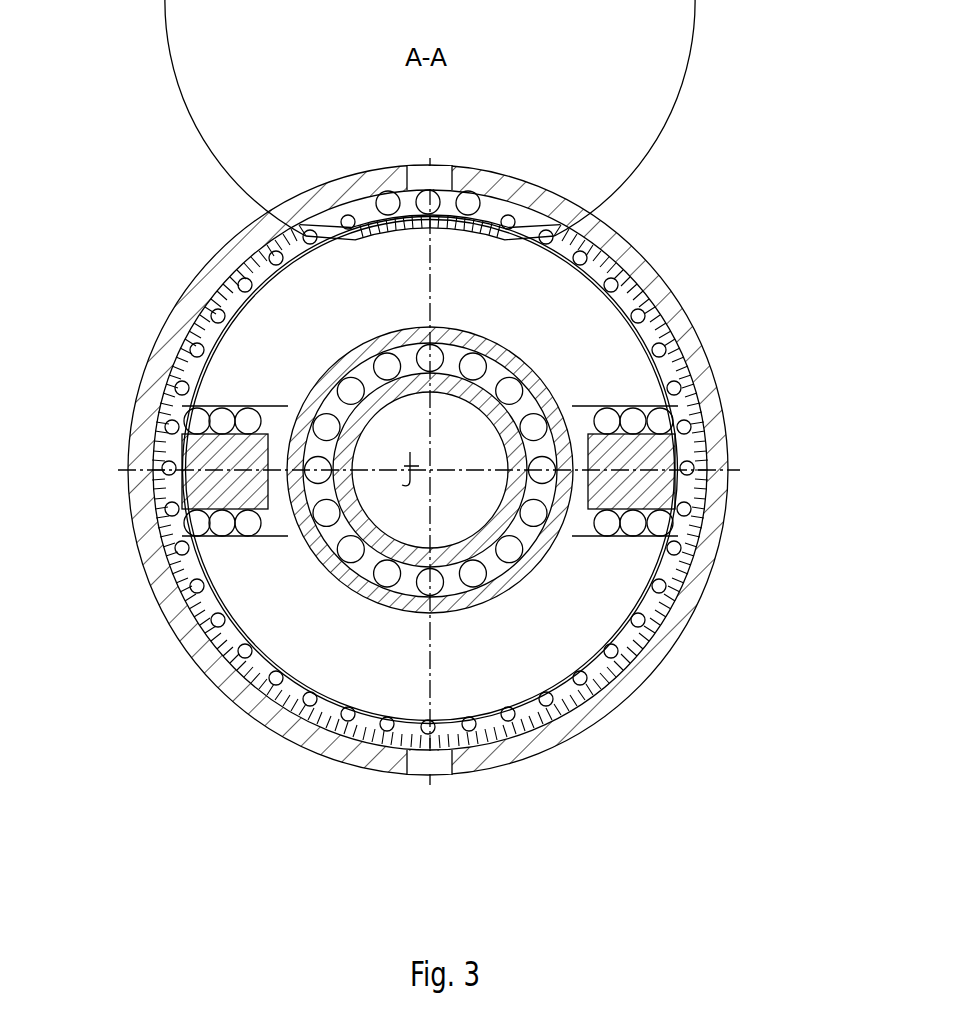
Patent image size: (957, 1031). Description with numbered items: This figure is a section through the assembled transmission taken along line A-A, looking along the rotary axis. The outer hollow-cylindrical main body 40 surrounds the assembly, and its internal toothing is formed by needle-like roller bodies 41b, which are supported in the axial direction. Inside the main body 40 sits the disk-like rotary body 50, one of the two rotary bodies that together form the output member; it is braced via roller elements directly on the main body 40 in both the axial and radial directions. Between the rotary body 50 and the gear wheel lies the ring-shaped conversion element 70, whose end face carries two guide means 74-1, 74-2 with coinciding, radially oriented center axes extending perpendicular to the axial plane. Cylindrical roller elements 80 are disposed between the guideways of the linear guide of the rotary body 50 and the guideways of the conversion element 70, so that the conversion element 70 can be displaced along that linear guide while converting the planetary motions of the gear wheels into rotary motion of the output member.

The main body 40 is at (547, 203).
The needle-like roller bodies 41b is at (405, 178).
The rotary body 50 is at (260, 338).
The cylindrical roller elements 80 is at (152, 385).
The conversion element 70 is at (577, 423).
The guide means 74-1 is at (192, 497).
The guide means 74-2 is at (627, 490).